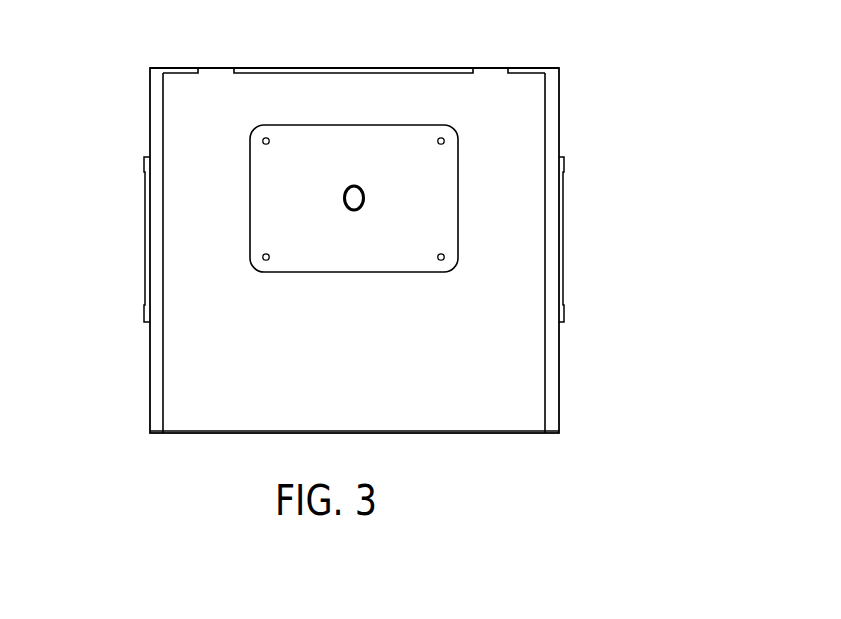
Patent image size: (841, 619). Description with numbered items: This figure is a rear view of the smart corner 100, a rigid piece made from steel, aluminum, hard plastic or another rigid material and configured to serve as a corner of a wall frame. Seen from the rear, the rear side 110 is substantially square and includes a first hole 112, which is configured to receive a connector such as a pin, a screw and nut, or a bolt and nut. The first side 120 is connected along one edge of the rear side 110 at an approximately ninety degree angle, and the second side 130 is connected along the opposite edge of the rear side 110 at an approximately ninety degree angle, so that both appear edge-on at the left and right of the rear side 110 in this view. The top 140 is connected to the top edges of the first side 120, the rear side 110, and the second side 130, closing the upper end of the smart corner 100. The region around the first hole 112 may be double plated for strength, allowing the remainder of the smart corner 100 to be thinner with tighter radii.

The smart corner 100 is at (585, 55).
The rear side 110 is at (198, 124).
The first hole 112 is at (353, 190).
The first side 120 is at (568, 239).
The second side 130 is at (141, 238).
The top 140 is at (413, 63).